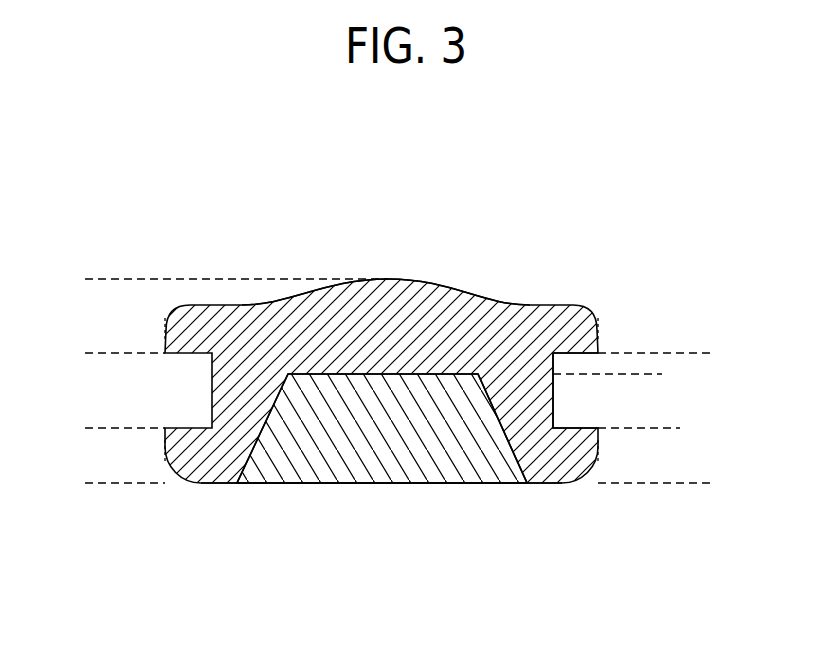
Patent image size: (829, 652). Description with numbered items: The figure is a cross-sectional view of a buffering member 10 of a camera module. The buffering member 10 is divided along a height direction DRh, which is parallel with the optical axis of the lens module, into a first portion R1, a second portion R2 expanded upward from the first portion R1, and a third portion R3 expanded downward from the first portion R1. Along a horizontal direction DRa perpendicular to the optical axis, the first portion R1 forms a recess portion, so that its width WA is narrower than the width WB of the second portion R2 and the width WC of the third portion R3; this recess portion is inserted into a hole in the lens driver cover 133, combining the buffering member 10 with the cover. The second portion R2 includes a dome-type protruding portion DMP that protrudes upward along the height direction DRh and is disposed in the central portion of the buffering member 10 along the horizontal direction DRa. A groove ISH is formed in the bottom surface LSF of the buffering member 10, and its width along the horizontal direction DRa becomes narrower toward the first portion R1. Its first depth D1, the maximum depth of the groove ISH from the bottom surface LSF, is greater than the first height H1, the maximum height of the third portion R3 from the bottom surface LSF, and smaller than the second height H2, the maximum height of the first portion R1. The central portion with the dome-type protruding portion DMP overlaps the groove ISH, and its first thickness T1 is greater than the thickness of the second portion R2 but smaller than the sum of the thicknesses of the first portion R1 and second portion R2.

The buffering member 10 is at (580, 273).
The lens driver cover 133 is at (604, 428).
The dome-type protruding portion DMP is at (413, 279).
The bottom surface LSF is at (206, 484).
The groove ISH is at (257, 448).
The width of the second portion WB is at (598, 330).
The width of the first portion WA is at (553, 393).
The width of the third portion WC is at (598, 452).
The first thickness T1 is at (383, 374).
The first portion R1 is at (85, 353).
The second portion R2 is at (85, 279).
The third portion R3 is at (85, 428).
The first depth D1 is at (637, 483).
The first height H1 is at (678, 428).
The second height H2 is at (715, 353).
The height direction DRh is at (78, 620).
The horizontal direction DRa is at (78, 620).